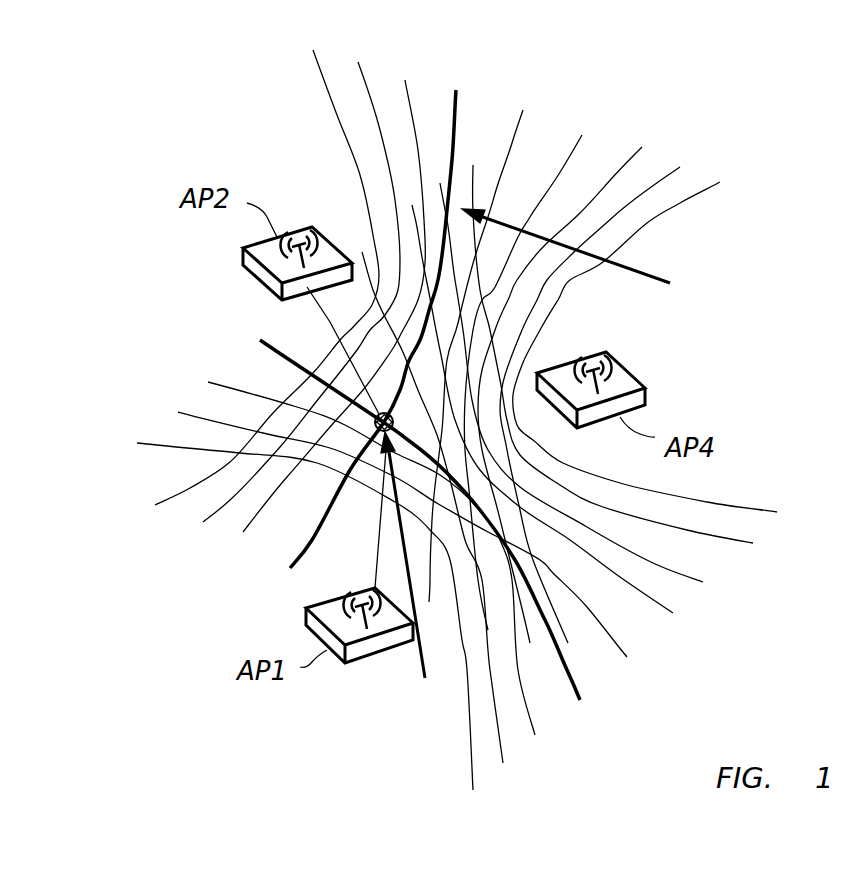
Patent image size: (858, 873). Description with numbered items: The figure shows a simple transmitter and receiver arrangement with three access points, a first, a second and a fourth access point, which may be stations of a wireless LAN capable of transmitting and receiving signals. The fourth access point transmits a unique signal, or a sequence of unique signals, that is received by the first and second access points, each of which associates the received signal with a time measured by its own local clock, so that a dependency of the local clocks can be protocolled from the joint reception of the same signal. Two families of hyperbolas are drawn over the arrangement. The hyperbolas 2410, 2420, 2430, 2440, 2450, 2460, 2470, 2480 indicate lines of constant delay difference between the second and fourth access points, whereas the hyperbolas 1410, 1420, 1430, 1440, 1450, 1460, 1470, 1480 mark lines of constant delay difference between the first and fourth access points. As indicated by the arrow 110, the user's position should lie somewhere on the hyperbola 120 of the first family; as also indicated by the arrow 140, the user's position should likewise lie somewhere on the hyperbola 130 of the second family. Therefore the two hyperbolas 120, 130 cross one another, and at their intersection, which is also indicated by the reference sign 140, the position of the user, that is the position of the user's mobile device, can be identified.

The hyperbola indication 110 is at (670, 284).
The hyperbola 120 is at (457, 97).
The hyperbola 130 is at (262, 341).
The user's position indication 140 is at (421, 677).
The hyperbola of constant delay difference between AP1 and AP4 1410 is at (777, 512).
The hyperbola of constant delay difference between AP1 and AP4 1420 is at (753, 543).
The hyperbola of constant delay difference between AP1 and AP4 1430 is at (703, 582).
The hyperbola of constant delay difference between AP1 and AP4 1440 is at (666, 606).
The hyperbola of constant delay difference between AP1 and AP4 1450 is at (622, 650).
The hyperbola of constant delay difference between AP1 and AP4 1460 is at (535, 735).
The hyperbola of constant delay difference between AP1 and AP4 1470 is at (503, 763).
The hyperbola of constant delay difference between AP1 and AP4 1480 is at (474, 789).
The hyperbola of constant delay difference between AP2 and AP4 2410 is at (313, 57).
The hyperbola of constant delay difference between AP2 and AP4 2420 is at (360, 60).
The hyperbola of constant delay difference between AP2 and AP4 2430 is at (412, 73).
The hyperbola of constant delay difference between AP2 and AP4 2440 is at (523, 112).
The hyperbola of constant delay difference between AP2 and AP4 2450 is at (583, 133).
The hyperbola of constant delay difference between AP2 and AP4 2460 is at (643, 148).
The hyperbola of constant delay difference between AP2 and AP4 2470 is at (677, 167).
The hyperbola of constant delay difference between AP2 and AP4 2480 is at (677, 341).